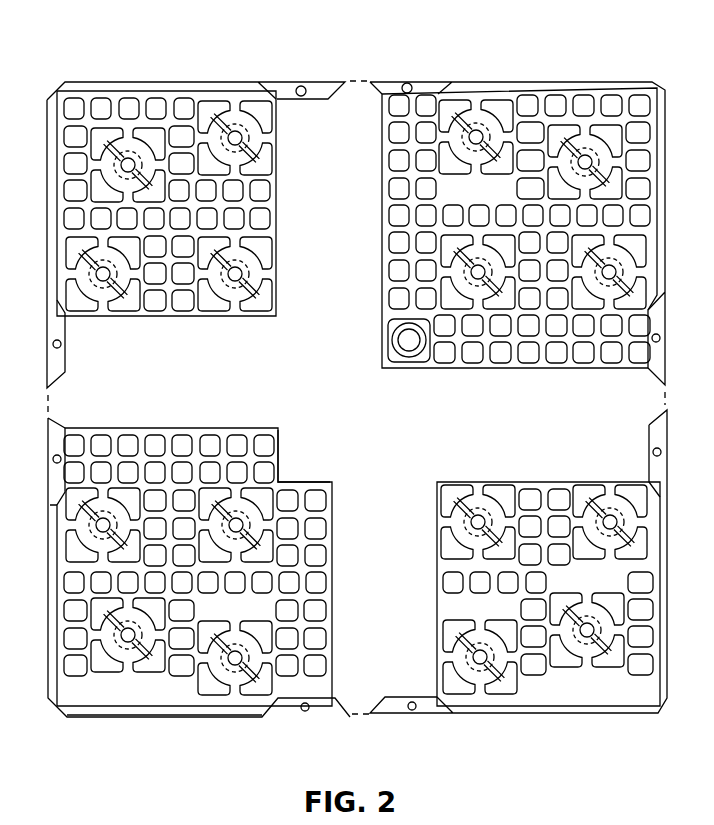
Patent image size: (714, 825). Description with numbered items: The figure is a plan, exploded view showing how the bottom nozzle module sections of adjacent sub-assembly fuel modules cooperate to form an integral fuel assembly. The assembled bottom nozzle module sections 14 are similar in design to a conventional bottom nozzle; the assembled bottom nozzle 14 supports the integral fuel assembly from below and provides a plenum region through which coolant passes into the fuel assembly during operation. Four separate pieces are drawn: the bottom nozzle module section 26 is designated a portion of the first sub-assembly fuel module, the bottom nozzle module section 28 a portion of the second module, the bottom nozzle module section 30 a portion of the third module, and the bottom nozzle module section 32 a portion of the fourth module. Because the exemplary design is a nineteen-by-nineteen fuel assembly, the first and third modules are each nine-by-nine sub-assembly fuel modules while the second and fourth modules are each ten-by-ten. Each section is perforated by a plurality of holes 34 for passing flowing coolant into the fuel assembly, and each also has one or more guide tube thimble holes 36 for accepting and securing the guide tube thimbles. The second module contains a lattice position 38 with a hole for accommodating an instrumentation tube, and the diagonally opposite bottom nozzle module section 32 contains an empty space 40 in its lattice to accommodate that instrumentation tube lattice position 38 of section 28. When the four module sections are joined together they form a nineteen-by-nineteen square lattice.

The bottom nozzle module sections 14 is at (595, 66).
The bottom nozzle module section 26 is at (52, 160).
The bottom nozzle module section 28 is at (662, 122).
The bottom nozzle module section 30 is at (658, 505).
The bottom nozzle module section 32 is at (50, 645).
The holes 34 is at (107, 102).
The guide tube thimble holes 36 is at (235, 136).
The lattice position 38 is at (392, 340).
The empty space 40 is at (289, 484).